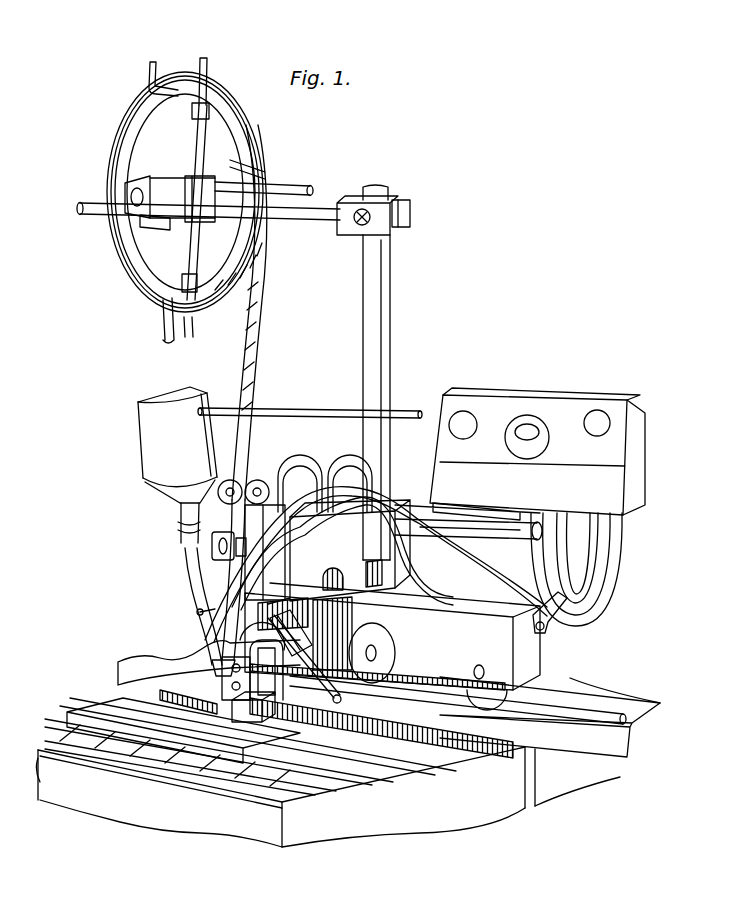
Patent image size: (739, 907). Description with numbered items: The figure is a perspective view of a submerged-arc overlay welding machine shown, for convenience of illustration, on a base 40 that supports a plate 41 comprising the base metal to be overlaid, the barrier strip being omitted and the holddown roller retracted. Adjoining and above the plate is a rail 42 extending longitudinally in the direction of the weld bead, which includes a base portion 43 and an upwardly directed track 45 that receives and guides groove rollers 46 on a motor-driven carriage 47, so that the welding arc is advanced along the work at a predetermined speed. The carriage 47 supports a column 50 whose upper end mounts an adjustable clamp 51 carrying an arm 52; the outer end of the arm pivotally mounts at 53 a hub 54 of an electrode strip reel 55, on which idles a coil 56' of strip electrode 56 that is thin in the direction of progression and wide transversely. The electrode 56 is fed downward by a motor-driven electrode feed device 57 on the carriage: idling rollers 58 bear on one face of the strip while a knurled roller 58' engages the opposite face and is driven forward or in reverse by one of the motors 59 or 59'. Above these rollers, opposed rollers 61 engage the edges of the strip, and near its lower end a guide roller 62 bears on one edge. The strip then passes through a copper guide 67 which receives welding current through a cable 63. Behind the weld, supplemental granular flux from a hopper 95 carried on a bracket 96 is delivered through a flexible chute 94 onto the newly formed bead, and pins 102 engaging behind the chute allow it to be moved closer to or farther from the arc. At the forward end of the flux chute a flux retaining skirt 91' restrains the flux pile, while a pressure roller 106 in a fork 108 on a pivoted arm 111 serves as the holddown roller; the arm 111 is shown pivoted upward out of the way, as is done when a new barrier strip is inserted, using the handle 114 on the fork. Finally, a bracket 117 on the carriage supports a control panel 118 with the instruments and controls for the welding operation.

The base 40 is at (365, 815).
The plate 41 is at (85, 708).
The rail 42 is at (615, 695).
The base portion 43 is at (522, 742).
The track 45 is at (588, 724).
The groove rollers 46 is at (380, 655).
The carriage 47 is at (398, 656).
The column 50 is at (391, 342).
The adjustable clamp 51 is at (411, 214).
The arm 52 is at (318, 205).
The pivot 53 is at (150, 182).
The hub 54 is at (175, 222).
The electrode strip reel 55 is at (208, 72).
The strip electrode 56 is at (263, 392).
The coil of strip electrode 56' is at (203, 192).
The electrode feed device 57 is at (327, 550).
The idling rollers 58 is at (178, 544).
The knurled roller 58' is at (174, 555).
The motor 59 is at (300, 470).
The motor 59' is at (350, 465).
The opposed rollers 61 is at (218, 482).
The guide roller 62 is at (205, 596).
The cable 63 is at (185, 630).
The copper guide 67 is at (228, 705).
The flux retaining skirt 91' is at (250, 721).
The chute 94 is at (200, 612).
The hopper 95 is at (177, 465).
The bracket 96 is at (322, 408).
The pins 102 is at (196, 578).
The pressure roller 106 is at (312, 598).
The fork 108 is at (360, 600).
The arm 111 is at (292, 680).
The handle 114 is at (381, 727).
The bracket 117 is at (428, 512).
The control panel 118 is at (518, 400).